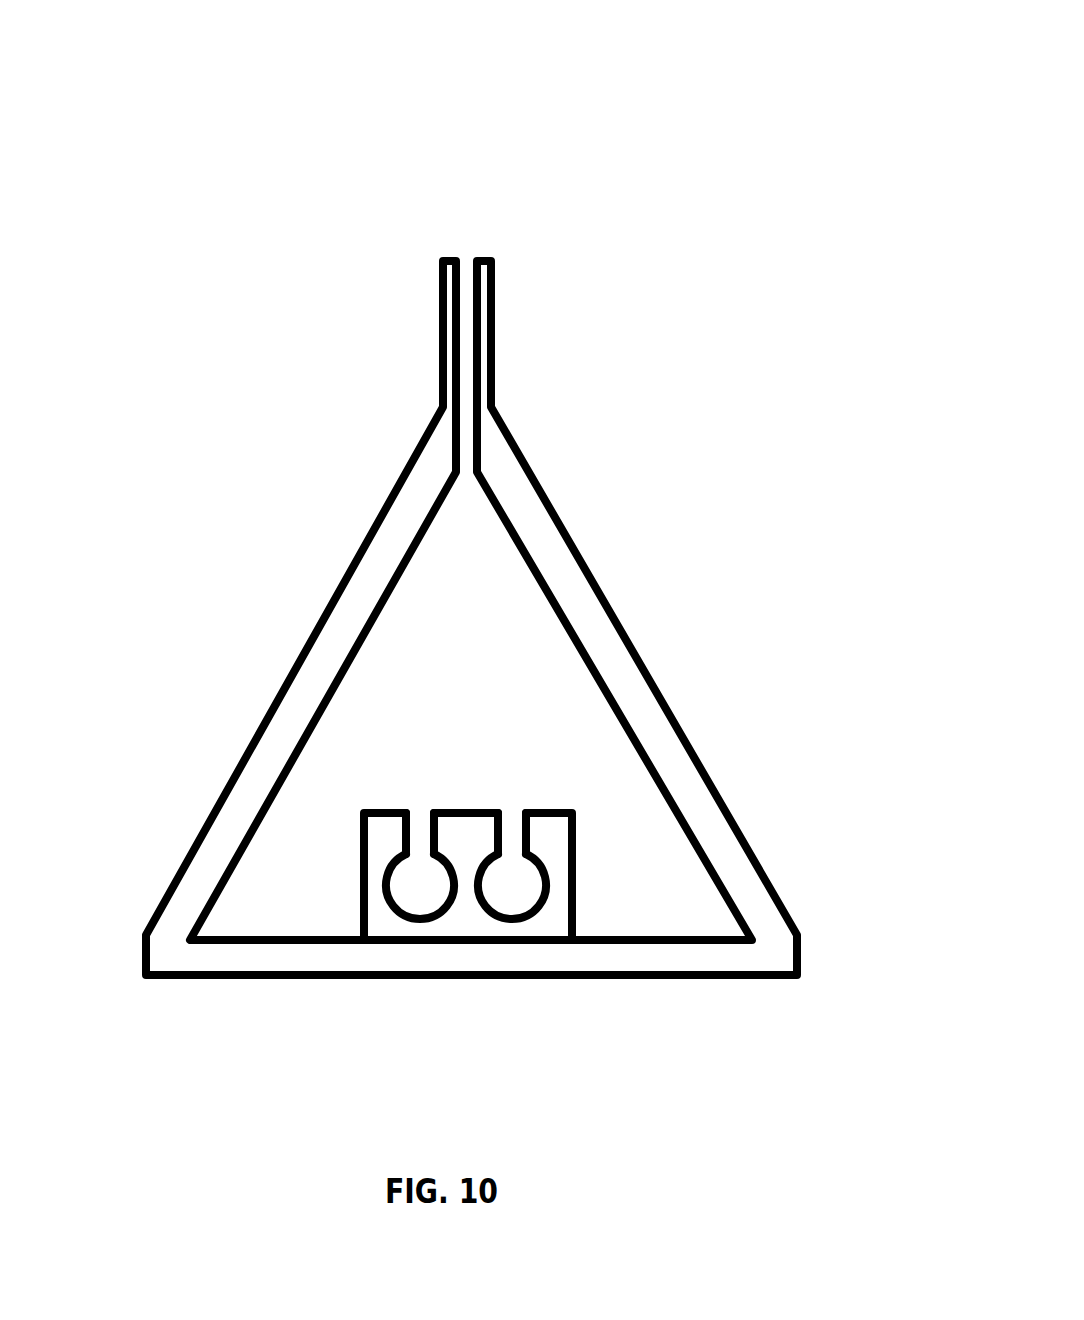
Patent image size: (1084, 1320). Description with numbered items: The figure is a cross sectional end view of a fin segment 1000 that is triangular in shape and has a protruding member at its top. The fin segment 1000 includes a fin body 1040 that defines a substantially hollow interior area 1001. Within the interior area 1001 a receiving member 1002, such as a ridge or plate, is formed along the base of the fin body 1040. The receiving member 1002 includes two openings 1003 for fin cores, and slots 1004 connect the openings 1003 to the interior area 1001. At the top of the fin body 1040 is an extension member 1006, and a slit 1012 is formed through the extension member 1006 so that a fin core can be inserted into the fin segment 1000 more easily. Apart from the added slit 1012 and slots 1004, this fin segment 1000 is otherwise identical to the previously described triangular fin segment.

The fin segment 1000 is at (755, 107).
The interior area 1001 is at (545, 662).
The receiving member 1002 is at (550, 838).
The openings 1003 is at (513, 903).
The slots 1004 is at (510, 833).
The extension member 1006 is at (497, 333).
The slit 1012 is at (467, 272).
The fin body 1040 is at (562, 510).